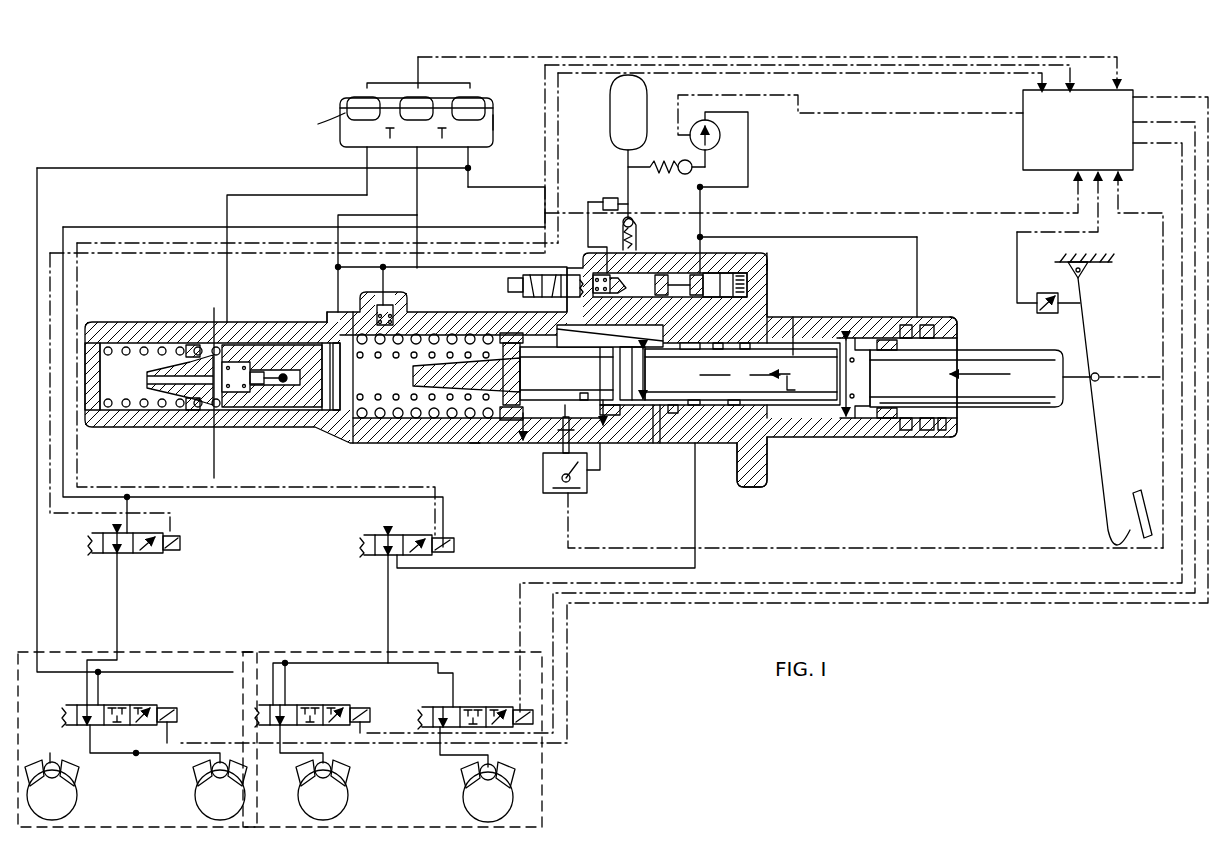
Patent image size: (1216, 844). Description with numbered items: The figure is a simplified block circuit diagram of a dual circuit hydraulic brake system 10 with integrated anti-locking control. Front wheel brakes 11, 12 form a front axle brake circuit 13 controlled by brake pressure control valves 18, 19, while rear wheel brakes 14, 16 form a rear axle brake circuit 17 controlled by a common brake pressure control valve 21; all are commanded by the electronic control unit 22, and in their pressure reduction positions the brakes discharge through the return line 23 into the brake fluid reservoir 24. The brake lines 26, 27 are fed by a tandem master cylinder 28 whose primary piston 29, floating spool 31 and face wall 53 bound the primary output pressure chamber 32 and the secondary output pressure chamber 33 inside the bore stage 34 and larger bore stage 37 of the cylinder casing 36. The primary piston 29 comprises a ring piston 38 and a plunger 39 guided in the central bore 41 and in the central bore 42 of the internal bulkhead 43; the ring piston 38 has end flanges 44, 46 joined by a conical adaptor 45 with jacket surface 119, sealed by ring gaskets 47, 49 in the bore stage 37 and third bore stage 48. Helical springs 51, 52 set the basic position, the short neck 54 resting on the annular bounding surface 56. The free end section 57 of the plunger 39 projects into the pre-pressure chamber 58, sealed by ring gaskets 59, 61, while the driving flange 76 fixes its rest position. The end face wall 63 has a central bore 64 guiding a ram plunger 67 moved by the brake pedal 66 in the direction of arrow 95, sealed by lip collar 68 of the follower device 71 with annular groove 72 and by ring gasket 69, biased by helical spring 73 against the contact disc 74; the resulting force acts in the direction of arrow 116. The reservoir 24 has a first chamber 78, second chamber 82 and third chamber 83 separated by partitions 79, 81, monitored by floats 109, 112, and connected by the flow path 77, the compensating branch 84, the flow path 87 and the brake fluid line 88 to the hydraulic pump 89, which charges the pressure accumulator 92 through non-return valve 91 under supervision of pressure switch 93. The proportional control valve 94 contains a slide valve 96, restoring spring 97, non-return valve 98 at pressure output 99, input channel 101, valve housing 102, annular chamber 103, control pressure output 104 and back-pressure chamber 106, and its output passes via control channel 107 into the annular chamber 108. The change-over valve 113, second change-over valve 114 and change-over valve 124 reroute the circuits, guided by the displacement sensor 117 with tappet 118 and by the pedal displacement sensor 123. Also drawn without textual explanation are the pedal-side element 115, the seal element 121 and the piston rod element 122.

The hydraulic brake system 10 is at (622, 607).
The front wheel brake 11 is at (338, 772).
The front wheel brake 12 is at (476, 774).
The front axle brake circuit 13 is at (466, 652).
The rear wheel brake 14 is at (66, 772).
The rear wheel brake 16 is at (208, 772).
The rear axle brake circuit 17 is at (192, 652).
The brake pressure control valve 18 is at (330, 712).
The brake pressure control valve 19 is at (545, 712).
The brake pressure control valve 21 is at (150, 712).
The electronic control unit 22 is at (1048, 162).
The return line 23 is at (127, 168).
The brake fluid reservoir 24 is at (495, 140).
The brake line 26 is at (385, 609).
The brake line 27 is at (115, 608).
The tandem master cylinder 28 is at (487, 446).
The primary piston 29 is at (560, 455).
The floating spool 31 is at (260, 408).
The primary output pressure chamber 32 is at (380, 428).
The secondary output pressure chamber 33 is at (160, 405).
The bore stage 34 is at (122, 348).
The cylinder casing 36 is at (293, 325).
The bore stage 37 is at (433, 333).
The ring piston 38 is at (652, 428).
The plunger 39 is at (826, 420).
The central bore 41 is at (562, 350).
The central bore 42 is at (808, 420).
The internal bulkhead 43 is at (760, 372).
The end flange 44 is at (555, 440).
The adaptor 45 is at (676, 413).
The end flange 46 is at (657, 443).
The ring gasket 47 is at (523, 345).
The third bore stage 48 is at (610, 416).
The ring gasket 49 is at (670, 346).
The helical spring 51 is at (395, 340).
The helical spring 52 is at (152, 348).
The face wall 53 is at (90, 342).
The short neck 54 is at (682, 372).
The annular bounding surface 56 is at (702, 405).
The free end section 57 is at (793, 340).
The pre-pressure chamber 58 is at (822, 340).
The ring gasket 59 is at (732, 359).
The ring gasket 61 is at (760, 359).
The end face wall 63 is at (950, 340).
The central bore 64 is at (928, 430).
The brake pedal 66 is at (560, 420).
The plunger 67 is at (1012, 405).
The lip collar 68 is at (905, 430).
The ring gasket 69 is at (942, 430).
The follower device 71 is at (905, 325).
The annular groove 72 is at (927, 325).
The helical spring 73 is at (882, 420).
The contact disc 74 is at (858, 345).
The driving flange 76 is at (508, 362).
The first compensating and following flow path 77 is at (385, 215).
The first chamber 78 is at (416, 170).
The partition 79 is at (367, 160).
The partition 81 is at (460, 156).
The second chamber 82 is at (342, 140).
The third chamber 83 is at (485, 128).
The compensating branch 84 is at (418, 265).
The second compensating and following flow path 87 is at (225, 215).
The brake fluid line 88 is at (500, 190).
The hydraulic pump 89 is at (720, 133).
The non-return valve 91 is at (692, 170).
The pressure accumulator 92 is at (610, 112).
The pressure switch 93 is at (610, 197).
The proportional control valve 94 is at (770, 262).
The arrow 95 is at (985, 375).
The slide valve 96 is at (718, 280).
The restoring spring 97 is at (595, 283).
The non-return valve 98 is at (600, 232).
The pressure output 99 is at (632, 210).
The input channel 101 is at (648, 265).
The valve housing 102 is at (765, 268).
The annular chamber 103 is at (688, 296).
The control pressure output 104 is at (680, 268).
The back-pressure chamber 106 is at (632, 296).
The control channel 107 is at (567, 510).
The annular chamber 108 is at (740, 462).
The float 109 is at (413, 97).
The float 112 is at (475, 102).
The change-over valve 113 is at (145, 533).
The second change-over valve 114 is at (398, 556).
The brake pedal 115 is at (1130, 370).
The arrow 116 is at (807, 389).
The displacement sensor 117 is at (575, 495).
The tappet 118 is at (555, 495).
The conical outer jacket surface 119 is at (605, 462).
The seal 121 is at (580, 395).
The piston rod 122 is at (455, 392).
The displacement sensor 123 is at (1033, 290).
The change-over valve 124 is at (535, 275).